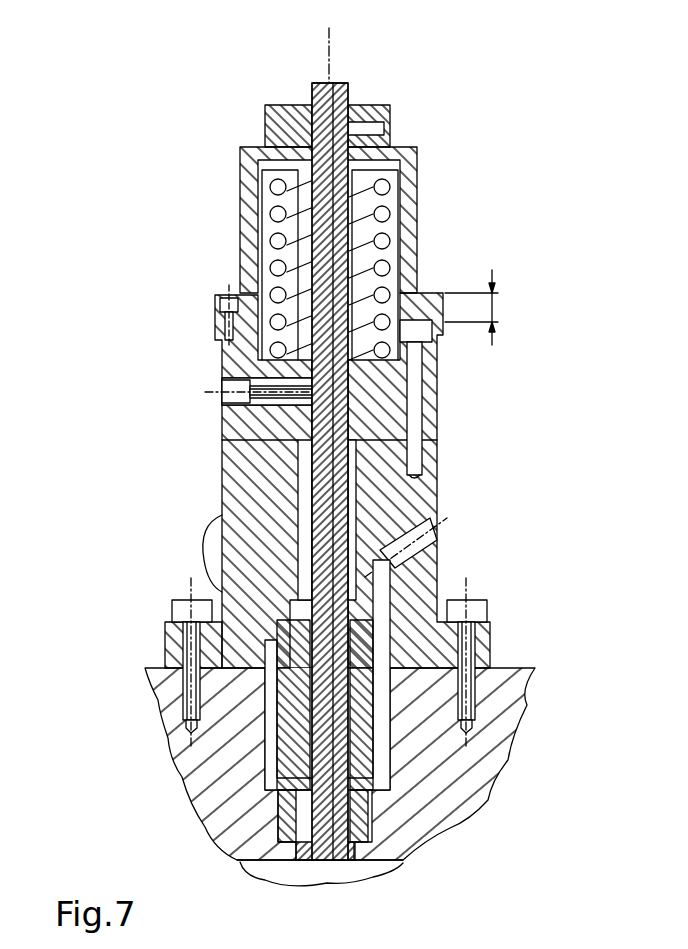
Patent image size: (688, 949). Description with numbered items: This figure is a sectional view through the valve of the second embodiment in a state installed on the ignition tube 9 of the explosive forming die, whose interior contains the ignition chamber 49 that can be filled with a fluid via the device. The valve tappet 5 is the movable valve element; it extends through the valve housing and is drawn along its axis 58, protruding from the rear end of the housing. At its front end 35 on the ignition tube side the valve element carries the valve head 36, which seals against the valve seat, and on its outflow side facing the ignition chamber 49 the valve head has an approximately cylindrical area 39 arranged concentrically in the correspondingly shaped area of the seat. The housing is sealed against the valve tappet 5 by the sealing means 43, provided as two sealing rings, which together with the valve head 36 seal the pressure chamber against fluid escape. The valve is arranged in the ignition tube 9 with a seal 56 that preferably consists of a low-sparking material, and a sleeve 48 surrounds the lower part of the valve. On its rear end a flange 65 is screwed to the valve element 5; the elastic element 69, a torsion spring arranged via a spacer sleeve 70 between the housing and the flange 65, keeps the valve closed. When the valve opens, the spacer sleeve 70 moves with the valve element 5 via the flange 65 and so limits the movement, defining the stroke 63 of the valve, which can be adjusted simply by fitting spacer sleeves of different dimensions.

The valve tappet 5 is at (342, 93).
The ignition tube 9 is at (495, 721).
The front end 35 is at (336, 862).
The valve head 36 is at (412, 858).
The cylindrical area 39 is at (355, 852).
The sealing means 43 is at (375, 357).
The sleeve 48 is at (385, 745).
The ignition chamber 49 is at (395, 876).
The seal 56 is at (372, 810).
The axis 58 is at (333, 47).
The stroke 63 is at (491, 307).
The flange 65 is at (380, 108).
The elastic element 69 is at (383, 215).
The spacer sleeve 70 is at (392, 180).